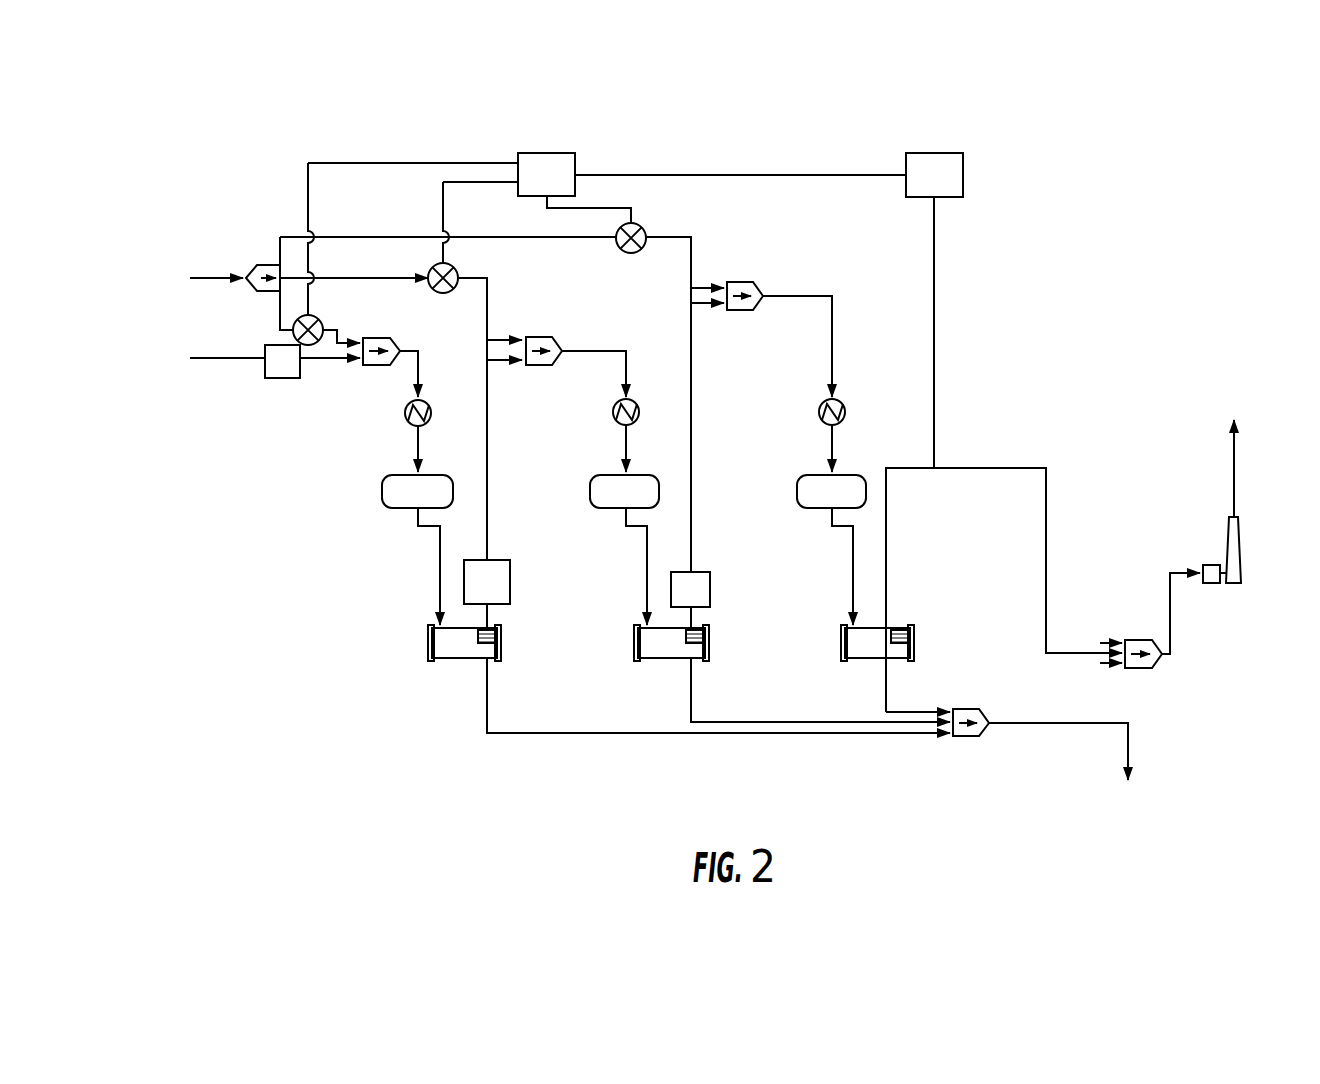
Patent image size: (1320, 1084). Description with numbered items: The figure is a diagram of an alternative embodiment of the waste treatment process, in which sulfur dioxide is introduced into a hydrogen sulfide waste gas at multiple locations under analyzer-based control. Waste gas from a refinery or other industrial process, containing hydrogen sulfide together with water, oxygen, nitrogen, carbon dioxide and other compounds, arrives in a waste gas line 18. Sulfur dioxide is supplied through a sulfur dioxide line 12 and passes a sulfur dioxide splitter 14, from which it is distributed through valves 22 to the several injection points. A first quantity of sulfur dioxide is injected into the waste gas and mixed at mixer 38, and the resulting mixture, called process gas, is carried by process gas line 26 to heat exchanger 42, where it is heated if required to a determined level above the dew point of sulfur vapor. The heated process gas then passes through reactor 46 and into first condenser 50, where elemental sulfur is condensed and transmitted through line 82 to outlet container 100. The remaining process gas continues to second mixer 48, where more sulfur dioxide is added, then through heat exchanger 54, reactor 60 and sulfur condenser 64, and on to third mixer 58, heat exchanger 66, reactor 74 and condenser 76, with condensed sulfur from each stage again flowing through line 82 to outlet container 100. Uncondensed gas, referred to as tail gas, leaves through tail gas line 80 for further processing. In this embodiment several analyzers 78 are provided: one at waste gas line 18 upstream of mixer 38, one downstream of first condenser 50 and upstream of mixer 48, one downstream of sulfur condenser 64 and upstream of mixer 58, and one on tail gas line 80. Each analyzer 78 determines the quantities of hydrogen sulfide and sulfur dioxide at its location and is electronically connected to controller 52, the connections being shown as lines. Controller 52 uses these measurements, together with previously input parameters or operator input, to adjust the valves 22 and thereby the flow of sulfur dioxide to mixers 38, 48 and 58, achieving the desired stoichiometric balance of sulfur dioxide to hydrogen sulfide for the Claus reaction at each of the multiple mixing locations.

The sulfur dioxide line 12 is at (213, 276).
The sulfur dioxide splitter 14 is at (256, 266).
The waste gas line 18 is at (241, 360).
The valves 22 is at (322, 320).
The process gas line 26 is at (420, 366).
The mixer 38 is at (371, 366).
The heat exchanger 42 is at (405, 413).
The reactor 46 is at (381, 491).
The second mixer 48 is at (540, 337).
The first condenser 50 is at (432, 646).
The controller 52 is at (545, 153).
The heat exchanger 54 is at (613, 412).
The third mixer 58 is at (740, 282).
The reactor 60 is at (589, 491).
The sulfur condenser 64 is at (638, 646).
The heat exchanger 66 is at (819, 412).
The reactor 74 is at (796, 491).
The condenser 76 is at (845, 646).
The analyzer 78 is at (938, 153).
The tail gas line 80 is at (1046, 493).
The line 82 is at (533, 735).
The outlet container 100 is at (965, 737).